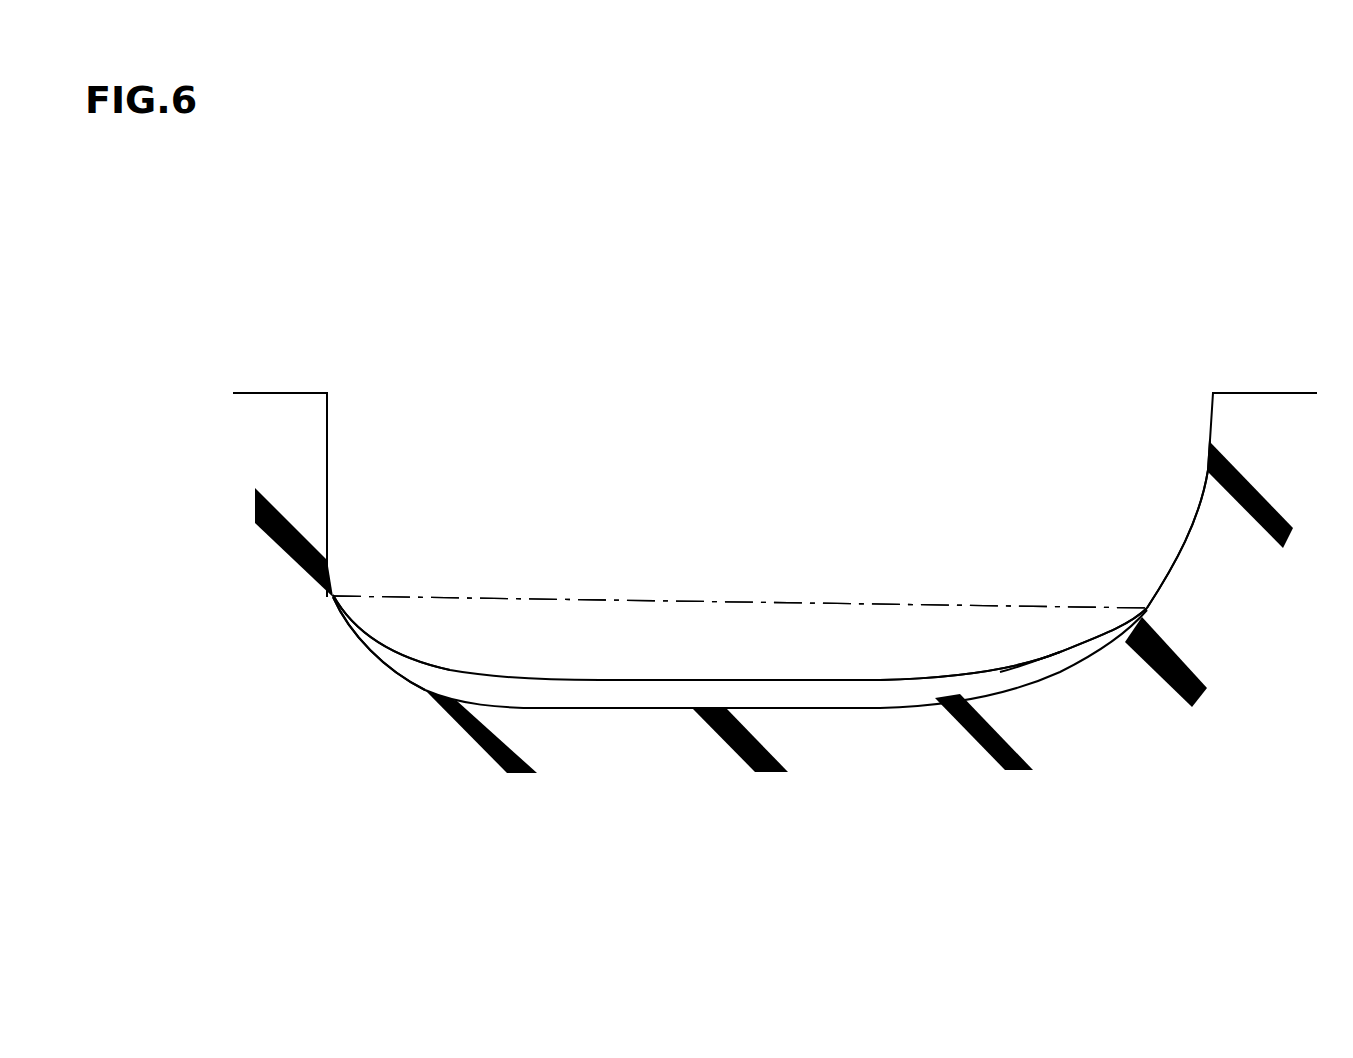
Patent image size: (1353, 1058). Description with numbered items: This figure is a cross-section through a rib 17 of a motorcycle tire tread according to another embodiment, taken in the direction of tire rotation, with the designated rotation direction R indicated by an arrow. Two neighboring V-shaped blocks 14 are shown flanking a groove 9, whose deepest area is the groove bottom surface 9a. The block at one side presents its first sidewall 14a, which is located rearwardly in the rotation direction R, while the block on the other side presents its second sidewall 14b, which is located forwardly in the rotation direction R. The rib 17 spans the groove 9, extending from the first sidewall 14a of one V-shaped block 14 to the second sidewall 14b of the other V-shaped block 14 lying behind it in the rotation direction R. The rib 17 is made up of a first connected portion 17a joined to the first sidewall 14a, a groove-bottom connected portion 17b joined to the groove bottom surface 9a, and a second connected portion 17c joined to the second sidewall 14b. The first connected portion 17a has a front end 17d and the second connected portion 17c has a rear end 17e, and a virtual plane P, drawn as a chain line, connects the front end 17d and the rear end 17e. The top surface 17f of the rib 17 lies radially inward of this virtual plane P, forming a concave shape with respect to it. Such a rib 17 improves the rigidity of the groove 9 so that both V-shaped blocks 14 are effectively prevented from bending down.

The groove 9 is at (625, 518).
The groove bottom surface 9a is at (681, 693).
The V-shaped block 14 is at (296, 415).
The first sidewall 14a is at (1210, 442).
The second sidewall 14b is at (330, 462).
The rib 17 is at (830, 695).
The first connected portion 17a is at (1027, 682).
The groove-bottom connected portion 17b is at (760, 708).
The second connected portion 17c is at (388, 668).
The front end 17d is at (1147, 607).
The rear end 17e is at (333, 593).
The top surface 17f is at (903, 678).
The virtual plane P is at (527, 600).
The rotation direction R is at (605, 828).